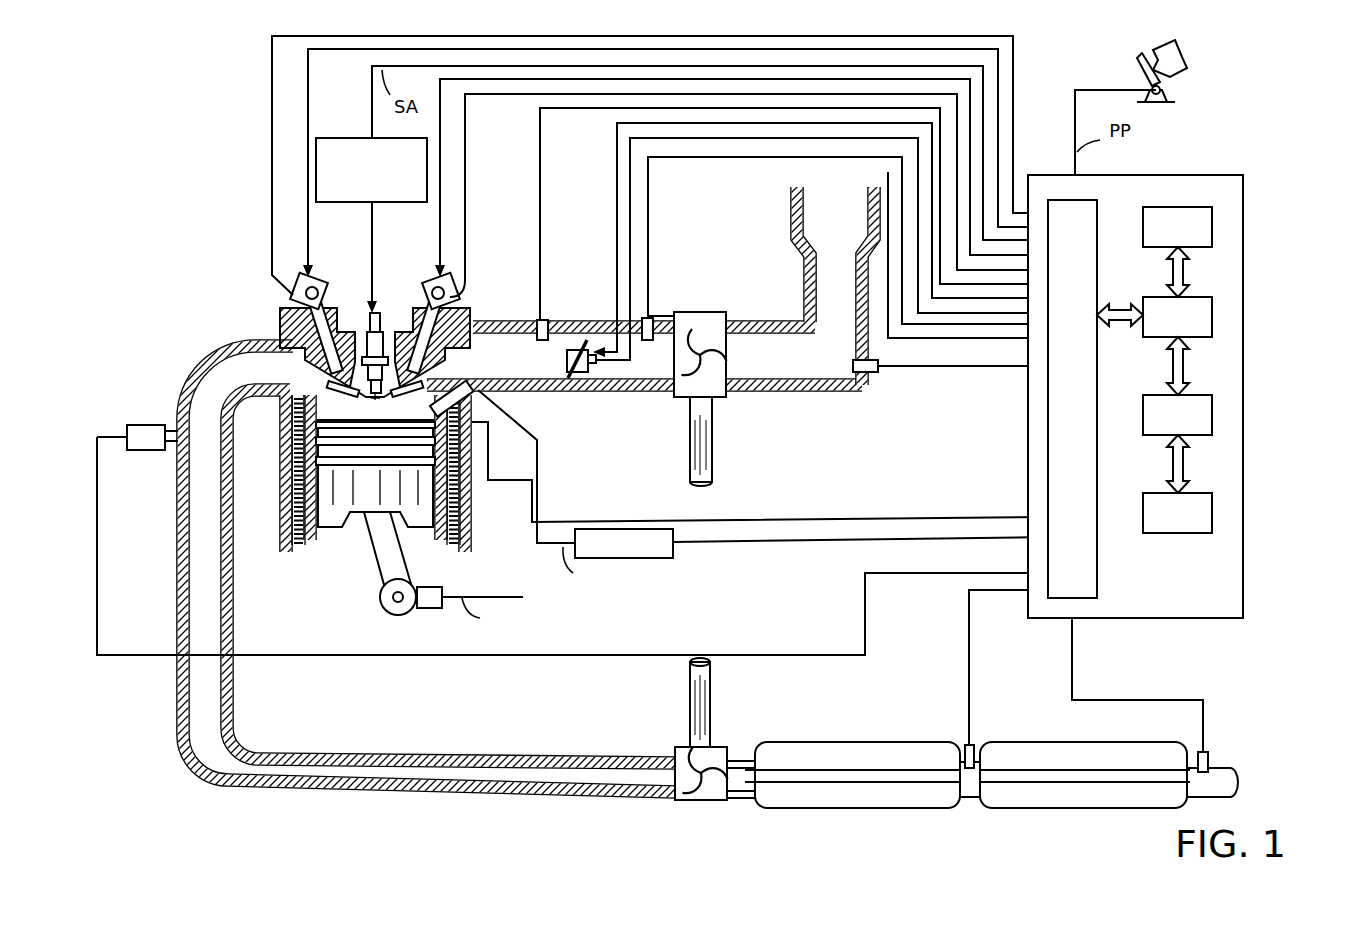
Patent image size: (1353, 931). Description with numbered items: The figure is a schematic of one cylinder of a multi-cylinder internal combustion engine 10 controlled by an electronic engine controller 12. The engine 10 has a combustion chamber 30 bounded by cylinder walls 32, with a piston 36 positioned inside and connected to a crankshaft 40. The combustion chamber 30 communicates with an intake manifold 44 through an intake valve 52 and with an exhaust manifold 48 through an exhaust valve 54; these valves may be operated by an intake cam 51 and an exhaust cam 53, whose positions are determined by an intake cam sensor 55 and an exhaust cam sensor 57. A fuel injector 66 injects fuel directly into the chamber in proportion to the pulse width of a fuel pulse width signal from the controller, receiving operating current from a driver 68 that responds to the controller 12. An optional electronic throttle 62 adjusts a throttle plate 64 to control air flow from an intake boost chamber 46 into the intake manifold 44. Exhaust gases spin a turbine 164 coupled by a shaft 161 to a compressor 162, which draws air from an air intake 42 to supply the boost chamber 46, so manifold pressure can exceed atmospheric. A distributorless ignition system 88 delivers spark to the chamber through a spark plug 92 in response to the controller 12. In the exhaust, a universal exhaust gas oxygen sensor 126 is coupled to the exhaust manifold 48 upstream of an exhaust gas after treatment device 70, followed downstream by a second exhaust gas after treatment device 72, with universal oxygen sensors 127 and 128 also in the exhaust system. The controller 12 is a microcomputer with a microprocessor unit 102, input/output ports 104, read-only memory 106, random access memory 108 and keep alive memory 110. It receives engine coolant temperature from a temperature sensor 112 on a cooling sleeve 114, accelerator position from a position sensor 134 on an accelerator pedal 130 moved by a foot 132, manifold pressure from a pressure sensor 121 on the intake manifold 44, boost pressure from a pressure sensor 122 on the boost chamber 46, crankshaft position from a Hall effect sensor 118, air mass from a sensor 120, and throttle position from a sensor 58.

The internal combustion engine 10 is at (214, 266).
The electronic engine controller 12 is at (1176, 381).
The combustion chamber 30 is at (648, 477).
The cylinder walls 32 is at (318, 545).
The piston 36 is at (360, 500).
The crankshaft 40 is at (390, 617).
The air intake 42 is at (821, 233).
The intake manifold 44 is at (505, 370).
The intake boost chamber 46 is at (633, 372).
The exhaust manifold 48 is at (233, 382).
The intake cam 51 is at (430, 276).
The intake valve 52 is at (420, 380).
The exhaust cam 53 is at (321, 276).
The exhaust valve 54 is at (315, 358).
The intake cam sensor 55 is at (450, 295).
The exhaust cam sensor 57 is at (296, 297).
The throttle position sensor 58 is at (600, 365).
The electronic throttle 62 is at (541, 320).
The throttle plate 64 is at (584, 332).
The fuel injector 66 is at (480, 402).
The driver 68 is at (598, 559).
The exhaust gas after treatment device 70 is at (812, 808).
The second exhaust gas after treatment device 72 is at (1045, 808).
The distributorless ignition system 88 is at (327, 138).
The spark plug 92 is at (389, 300).
The microprocessor unit 102 is at (1212, 312).
The input/output ports 104 is at (1098, 208).
The read-only memory 106 is at (1212, 222).
The random access memory 108 is at (1212, 410).
The keep alive memory 110 is at (1212, 508).
The temperature sensor 112 is at (476, 455).
The cooling sleeve 114 is at (455, 522).
The Hall effect sensor 118 is at (425, 610).
The air mass sensor 120 is at (876, 372).
The pressure sensor 121 is at (535, 320).
The pressure sensor 122 is at (652, 318).
The Universal Exhaust Gas Oxygen sensor 126 is at (127, 430).
The universal oxygen sensor 127 is at (965, 745).
The universal oxygen sensor 128 is at (1208, 752).
The accelerator pedal 130 is at (1187, 111).
The foot 132 is at (1183, 55).
The position sensor 134 is at (1177, 100).
The shaft 161 is at (690, 425).
The compressor 162 is at (722, 311).
The turbine 164 is at (680, 746).